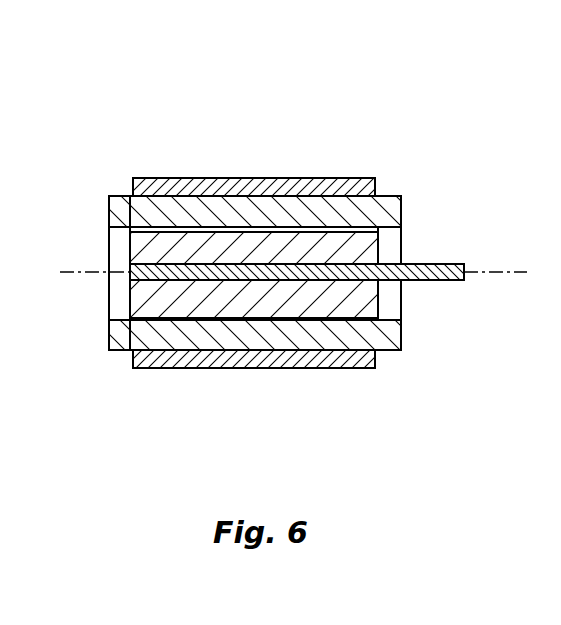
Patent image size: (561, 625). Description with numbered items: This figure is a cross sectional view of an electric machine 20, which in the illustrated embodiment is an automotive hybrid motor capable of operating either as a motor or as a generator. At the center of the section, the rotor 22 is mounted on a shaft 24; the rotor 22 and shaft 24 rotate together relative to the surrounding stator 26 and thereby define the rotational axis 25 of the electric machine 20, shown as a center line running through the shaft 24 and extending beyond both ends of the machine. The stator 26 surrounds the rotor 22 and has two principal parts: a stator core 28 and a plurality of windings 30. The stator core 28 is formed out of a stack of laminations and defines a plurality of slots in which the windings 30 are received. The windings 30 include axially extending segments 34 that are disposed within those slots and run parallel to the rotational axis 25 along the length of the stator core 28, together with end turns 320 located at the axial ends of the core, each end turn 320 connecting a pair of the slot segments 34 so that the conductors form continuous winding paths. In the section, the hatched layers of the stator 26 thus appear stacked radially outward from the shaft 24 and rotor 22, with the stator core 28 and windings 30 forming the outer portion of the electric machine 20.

The electric machine 20 is at (91, 105).
The rotor 22 is at (140, 249).
The shaft 24 is at (450, 277).
The rotational axis 25 is at (508, 272).
The stator 26 is at (133, 187).
The stator core 28 is at (185, 187).
The windings 30 is at (303, 207).
The axially extending segments 34 is at (238, 343).
The end turns 320 is at (395, 297).